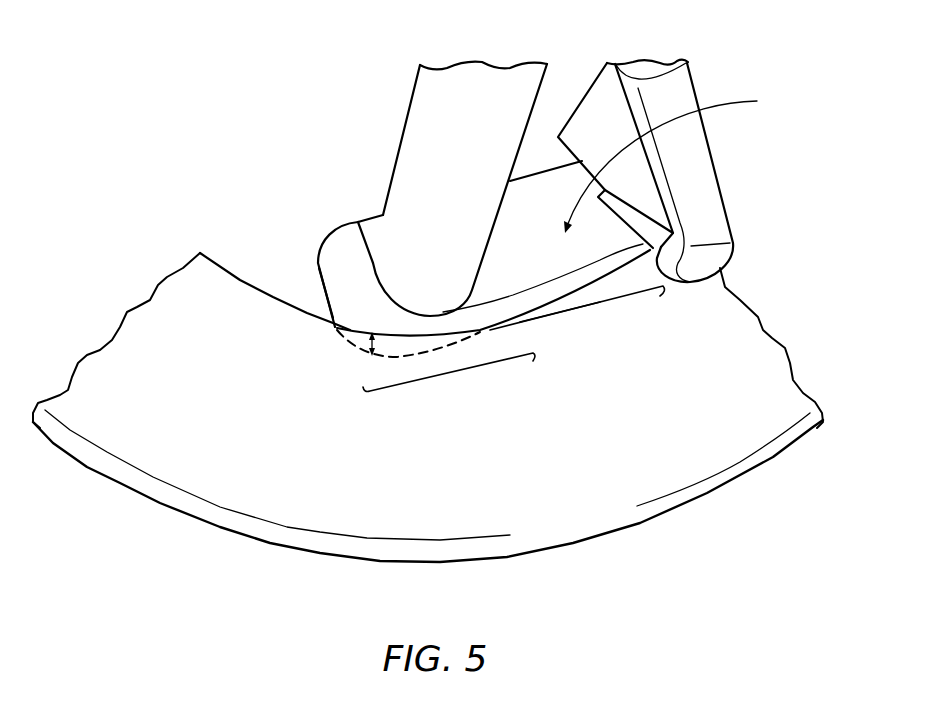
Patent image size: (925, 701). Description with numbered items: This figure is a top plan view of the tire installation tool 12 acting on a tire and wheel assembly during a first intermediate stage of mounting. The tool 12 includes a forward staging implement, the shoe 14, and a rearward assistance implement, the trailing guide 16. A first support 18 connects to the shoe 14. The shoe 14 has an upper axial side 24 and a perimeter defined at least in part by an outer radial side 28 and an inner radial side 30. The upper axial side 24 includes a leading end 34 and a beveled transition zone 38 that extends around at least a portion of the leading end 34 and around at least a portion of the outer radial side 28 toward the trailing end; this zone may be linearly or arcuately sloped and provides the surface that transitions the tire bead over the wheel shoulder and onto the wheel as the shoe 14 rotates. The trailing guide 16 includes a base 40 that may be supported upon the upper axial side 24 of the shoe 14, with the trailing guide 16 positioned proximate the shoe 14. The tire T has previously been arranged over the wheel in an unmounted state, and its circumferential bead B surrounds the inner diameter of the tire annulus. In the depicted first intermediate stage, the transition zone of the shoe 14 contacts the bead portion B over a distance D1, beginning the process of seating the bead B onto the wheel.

The tire installation tool 12 is at (488, 202).
The shoe 14 is at (394, 255).
The trailing guide 16 is at (756, 233).
The first support 18 is at (422, 97).
The upper axial side 24 is at (674, 161).
The outer radial side 28 is at (577, 297).
The inner radial side 30 is at (531, 177).
The leading end 34 is at (317, 263).
The beveled transition zone 38 is at (458, 372).
The base 40 is at (723, 171).
The circumferential bead B is at (560, 312).
The tire T is at (753, 370).
The distance D1 is at (366, 343).